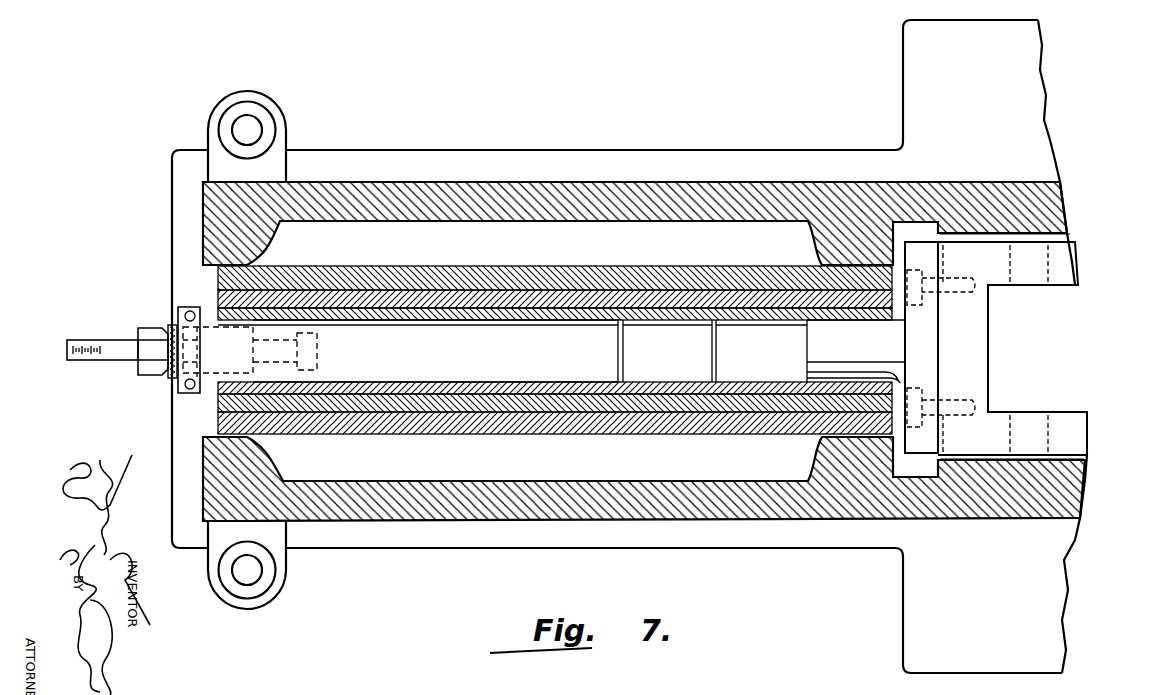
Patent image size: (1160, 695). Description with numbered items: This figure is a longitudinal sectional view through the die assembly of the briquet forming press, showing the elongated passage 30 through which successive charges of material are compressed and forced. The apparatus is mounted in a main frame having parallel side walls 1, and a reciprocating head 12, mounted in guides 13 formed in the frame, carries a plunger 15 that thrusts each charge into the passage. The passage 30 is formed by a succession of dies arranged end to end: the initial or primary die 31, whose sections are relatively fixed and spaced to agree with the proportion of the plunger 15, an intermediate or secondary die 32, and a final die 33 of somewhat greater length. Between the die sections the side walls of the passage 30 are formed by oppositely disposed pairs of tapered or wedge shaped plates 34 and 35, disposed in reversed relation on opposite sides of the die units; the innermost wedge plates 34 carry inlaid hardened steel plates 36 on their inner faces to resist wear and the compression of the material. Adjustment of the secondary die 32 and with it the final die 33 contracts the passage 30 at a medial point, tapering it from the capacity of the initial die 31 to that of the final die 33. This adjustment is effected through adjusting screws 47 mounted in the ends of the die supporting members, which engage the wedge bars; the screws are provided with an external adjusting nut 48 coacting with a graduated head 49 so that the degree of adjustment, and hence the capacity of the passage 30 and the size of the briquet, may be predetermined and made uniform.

The side walls 1 is at (497, 192).
The reciprocating head 12 is at (996, 348).
The guides 13 is at (1032, 238).
The plunger 15 is at (856, 351).
The elongated passage 30 is at (440, 362).
The initial or primary die 31 is at (761, 351).
The intermediate or secondary die 32 is at (667, 351).
The final die 33 is at (435, 351).
The wedge plates 34 is at (602, 402).
The wedge plates 35 is at (663, 423).
The inlaid hardened steel plates 36 is at (348, 387).
The adjusting screws 47 is at (120, 350).
The adjusting nut 48 is at (153, 332).
The graduated head 49 is at (172, 373).